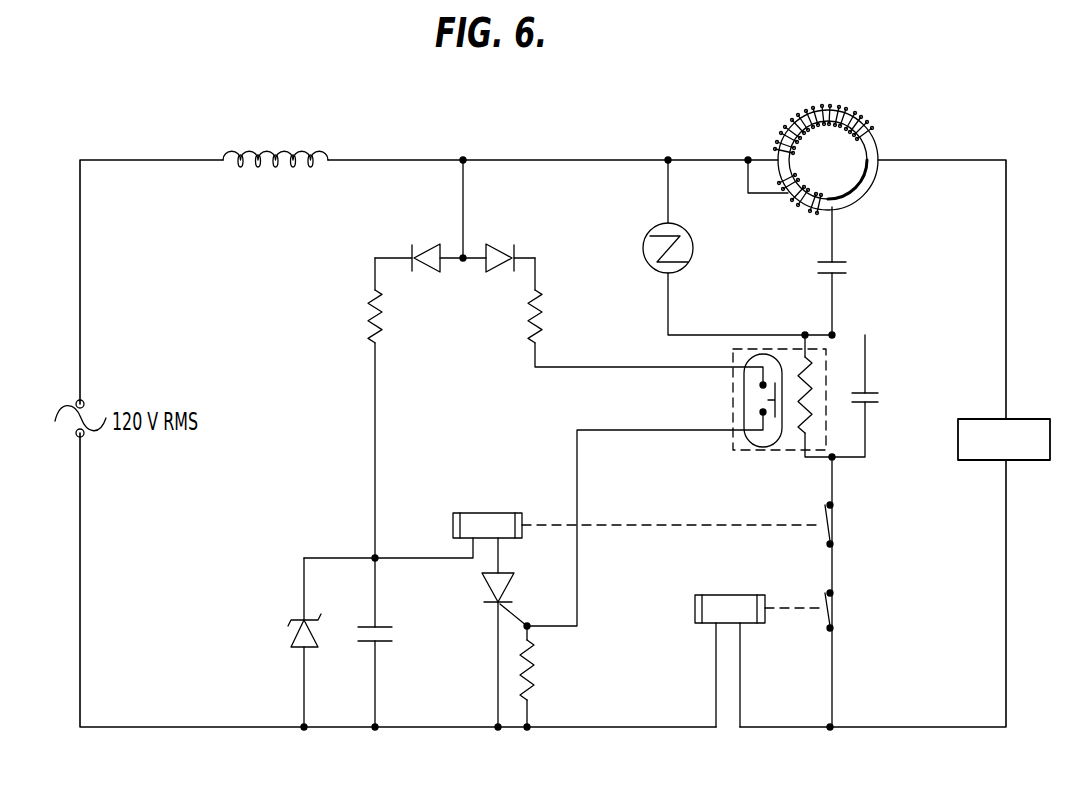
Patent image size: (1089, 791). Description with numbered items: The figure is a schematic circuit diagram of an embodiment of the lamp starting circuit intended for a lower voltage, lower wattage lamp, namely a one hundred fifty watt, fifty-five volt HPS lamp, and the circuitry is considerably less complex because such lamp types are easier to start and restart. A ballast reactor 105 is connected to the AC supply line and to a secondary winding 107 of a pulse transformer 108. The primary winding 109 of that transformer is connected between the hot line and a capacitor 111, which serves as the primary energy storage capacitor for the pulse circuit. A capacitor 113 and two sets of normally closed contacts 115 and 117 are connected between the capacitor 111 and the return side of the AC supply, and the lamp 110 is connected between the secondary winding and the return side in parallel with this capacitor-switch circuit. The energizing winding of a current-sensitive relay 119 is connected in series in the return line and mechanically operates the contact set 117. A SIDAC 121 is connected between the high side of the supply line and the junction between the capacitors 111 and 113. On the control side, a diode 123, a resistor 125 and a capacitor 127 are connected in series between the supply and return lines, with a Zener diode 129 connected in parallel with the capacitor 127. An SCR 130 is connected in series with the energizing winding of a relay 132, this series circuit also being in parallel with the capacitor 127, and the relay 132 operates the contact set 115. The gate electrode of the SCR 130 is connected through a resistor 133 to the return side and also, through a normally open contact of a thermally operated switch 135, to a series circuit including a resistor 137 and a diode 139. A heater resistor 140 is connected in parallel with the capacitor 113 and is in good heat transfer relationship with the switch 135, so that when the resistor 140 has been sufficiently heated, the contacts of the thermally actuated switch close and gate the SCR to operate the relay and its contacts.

The ballast reactor 105 is at (258, 150).
The secondary winding 107 is at (825, 114).
The pulse transformer 108 is at (882, 192).
The primary winding 109 is at (818, 207).
The lamp 110 is at (1034, 419).
The capacitor 111 is at (845, 271).
The capacitor 113 is at (878, 393).
The contacts 115 is at (850, 520).
The contacts 117 is at (850, 605).
The current-sensitive relay 119 is at (720, 595).
The SIDAC 121 is at (693, 250).
The diode 123 is at (426, 245).
The resistor 125 is at (385, 318).
The capacitor 127 is at (393, 641).
The Zener diode 129 is at (290, 639).
The SCR 130 is at (483, 591).
The relay 132 is at (483, 513).
The resistor 133 is at (534, 672).
The thermally operated switch 135 is at (745, 408).
The resistor 137 is at (540, 328).
The diode 139 is at (494, 245).
The heater resistor 140 is at (812, 394).